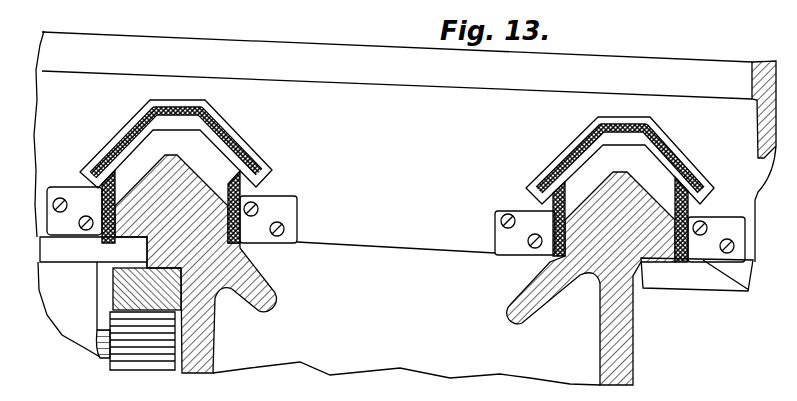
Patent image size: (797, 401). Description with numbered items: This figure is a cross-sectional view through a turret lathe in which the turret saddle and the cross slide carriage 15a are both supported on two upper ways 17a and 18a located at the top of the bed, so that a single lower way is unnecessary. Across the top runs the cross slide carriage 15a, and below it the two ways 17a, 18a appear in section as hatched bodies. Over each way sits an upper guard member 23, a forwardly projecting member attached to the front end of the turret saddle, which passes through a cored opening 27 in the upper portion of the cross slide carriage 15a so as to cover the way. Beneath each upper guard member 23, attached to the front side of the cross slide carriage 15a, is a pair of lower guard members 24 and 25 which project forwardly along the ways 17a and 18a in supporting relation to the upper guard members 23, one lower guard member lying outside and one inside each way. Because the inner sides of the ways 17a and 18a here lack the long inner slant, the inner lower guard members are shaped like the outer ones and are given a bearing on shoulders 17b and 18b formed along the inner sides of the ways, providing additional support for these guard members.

The cross slide carriage 15a is at (655, 76).
The upper way 17a is at (678, 165).
The shoulder 17b is at (553, 260).
The upper way 18a is at (180, 178).
The shoulder 18b is at (240, 247).
The upper guard member 23 is at (138, 123).
The lower guard member 24 is at (100, 192).
The lower guard member 25 is at (240, 222).
The cored opening 27 is at (222, 130).